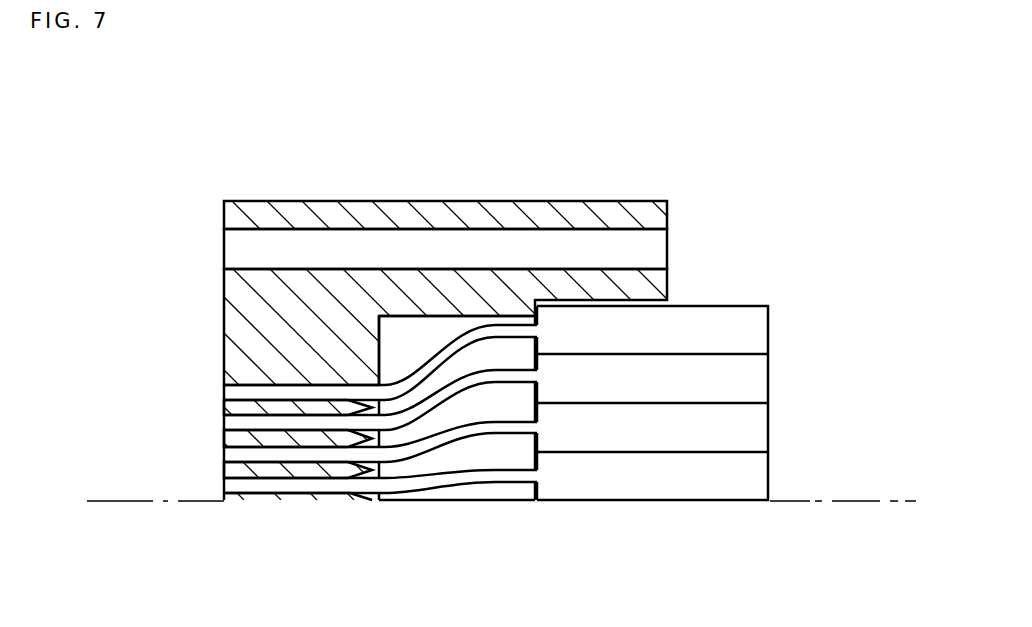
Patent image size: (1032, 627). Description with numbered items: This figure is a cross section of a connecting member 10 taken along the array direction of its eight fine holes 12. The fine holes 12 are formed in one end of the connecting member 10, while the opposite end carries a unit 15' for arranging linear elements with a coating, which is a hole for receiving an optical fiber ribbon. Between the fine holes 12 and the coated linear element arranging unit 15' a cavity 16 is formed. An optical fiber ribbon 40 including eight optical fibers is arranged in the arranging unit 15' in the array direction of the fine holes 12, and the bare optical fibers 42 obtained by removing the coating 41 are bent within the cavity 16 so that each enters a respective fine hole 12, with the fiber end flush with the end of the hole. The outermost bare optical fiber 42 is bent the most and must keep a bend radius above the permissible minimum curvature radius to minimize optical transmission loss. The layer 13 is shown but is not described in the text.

The connecting member 10 is at (356, 213).
The fine holes 12 is at (237, 396).
The cladding / sheath layer 13 is at (278, 250).
The unit for arranging linear elements with a coating 15' is at (489, 298).
The cavity 16 is at (422, 340).
The optical fiber ribbon 40 is at (726, 372).
The coating 41 is at (672, 320).
The bare optical fibers 42 is at (301, 395).